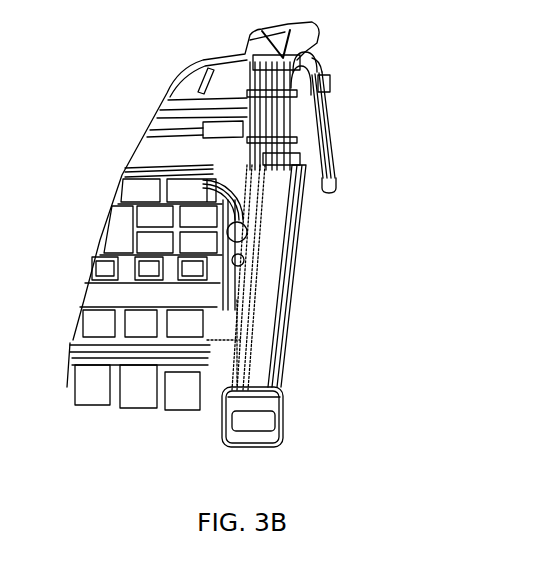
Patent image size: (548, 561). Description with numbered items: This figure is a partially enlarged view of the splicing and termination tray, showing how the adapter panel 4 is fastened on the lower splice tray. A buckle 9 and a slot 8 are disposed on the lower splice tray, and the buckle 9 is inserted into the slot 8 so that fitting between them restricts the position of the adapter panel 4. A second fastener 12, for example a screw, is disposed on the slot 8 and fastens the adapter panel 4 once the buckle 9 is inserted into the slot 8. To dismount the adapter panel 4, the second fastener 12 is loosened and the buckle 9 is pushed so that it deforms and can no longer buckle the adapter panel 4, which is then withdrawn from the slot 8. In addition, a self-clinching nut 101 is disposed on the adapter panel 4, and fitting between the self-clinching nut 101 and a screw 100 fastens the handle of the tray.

The slot 8 is at (308, 57).
The adapter panel 4 is at (311, 68).
The buckle 9 is at (312, 106).
The second fastener 12 is at (293, 130).
The screw 100 is at (290, 267).
The self-clinching nut 101 is at (165, 233).